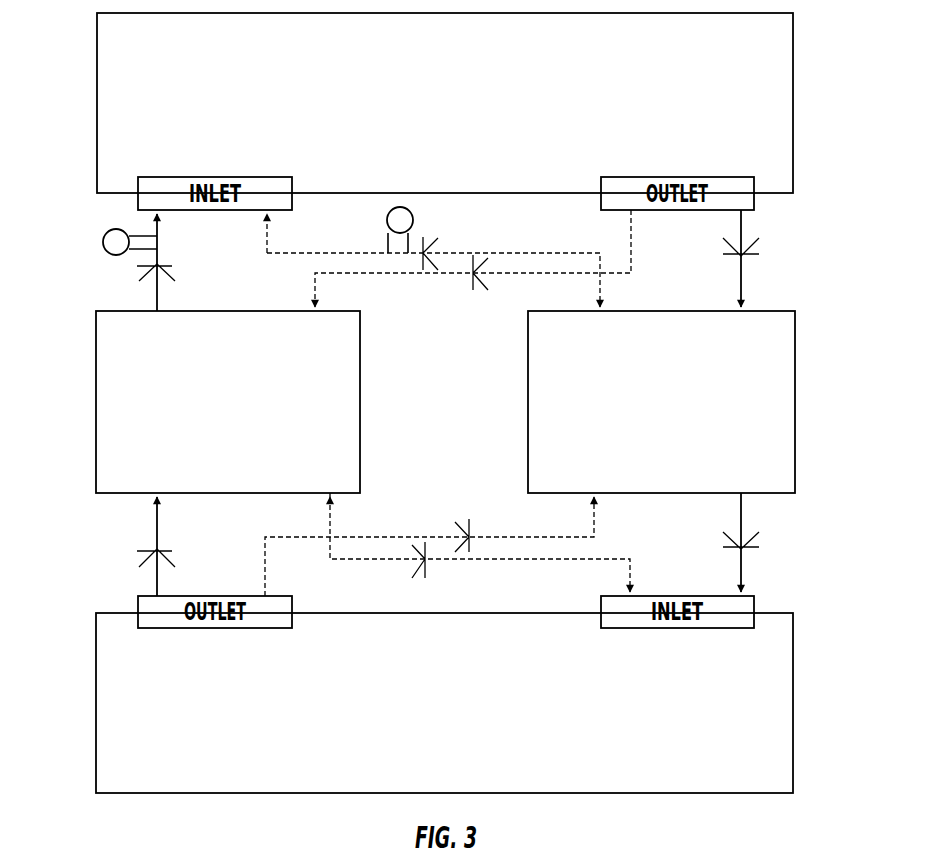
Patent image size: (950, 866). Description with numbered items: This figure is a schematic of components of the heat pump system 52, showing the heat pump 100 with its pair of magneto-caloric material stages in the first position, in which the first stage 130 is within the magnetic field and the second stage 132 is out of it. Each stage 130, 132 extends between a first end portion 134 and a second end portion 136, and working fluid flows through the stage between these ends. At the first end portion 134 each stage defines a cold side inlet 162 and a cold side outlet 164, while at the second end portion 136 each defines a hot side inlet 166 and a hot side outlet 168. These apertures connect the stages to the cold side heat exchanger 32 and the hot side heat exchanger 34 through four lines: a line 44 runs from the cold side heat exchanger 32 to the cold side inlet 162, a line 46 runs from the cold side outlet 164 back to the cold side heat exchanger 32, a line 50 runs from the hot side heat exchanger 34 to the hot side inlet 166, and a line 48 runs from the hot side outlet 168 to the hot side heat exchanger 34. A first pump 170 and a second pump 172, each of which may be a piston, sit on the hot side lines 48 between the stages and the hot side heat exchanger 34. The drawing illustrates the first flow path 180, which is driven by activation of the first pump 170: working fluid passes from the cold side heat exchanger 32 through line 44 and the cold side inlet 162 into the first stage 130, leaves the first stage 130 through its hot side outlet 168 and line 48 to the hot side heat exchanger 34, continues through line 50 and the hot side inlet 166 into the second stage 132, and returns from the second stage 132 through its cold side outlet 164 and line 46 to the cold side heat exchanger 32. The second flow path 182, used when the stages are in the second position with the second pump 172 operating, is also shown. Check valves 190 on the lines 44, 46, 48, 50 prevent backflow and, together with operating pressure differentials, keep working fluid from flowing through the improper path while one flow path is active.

The cold side heat exchanger 32 is at (461, 768).
The hot side heat exchanger 34 is at (458, 148).
The line 44 is at (157, 567).
The line 46 is at (745, 562).
The line 48 is at (160, 248).
The line 50 is at (745, 270).
The heat pump system 52 is at (77, 168).
The heat pump 100 is at (87, 404).
The first stage 130 is at (243, 415).
The second stage 132 is at (677, 415).
The first end portion 134 is at (92, 494).
The second end portion 136 is at (90, 323).
The cold side inlet 162 is at (163, 499).
The cold side outlet 164 is at (327, 497).
The hot side inlet 166 is at (322, 308).
The hot side outlet 168 is at (162, 304).
The first pump 170 is at (102, 240).
The second pump 172 is at (385, 221).
The first flow path 180 is at (135, 220).
The second flow path 182 is at (510, 248).
The check valve 190 is at (137, 276).